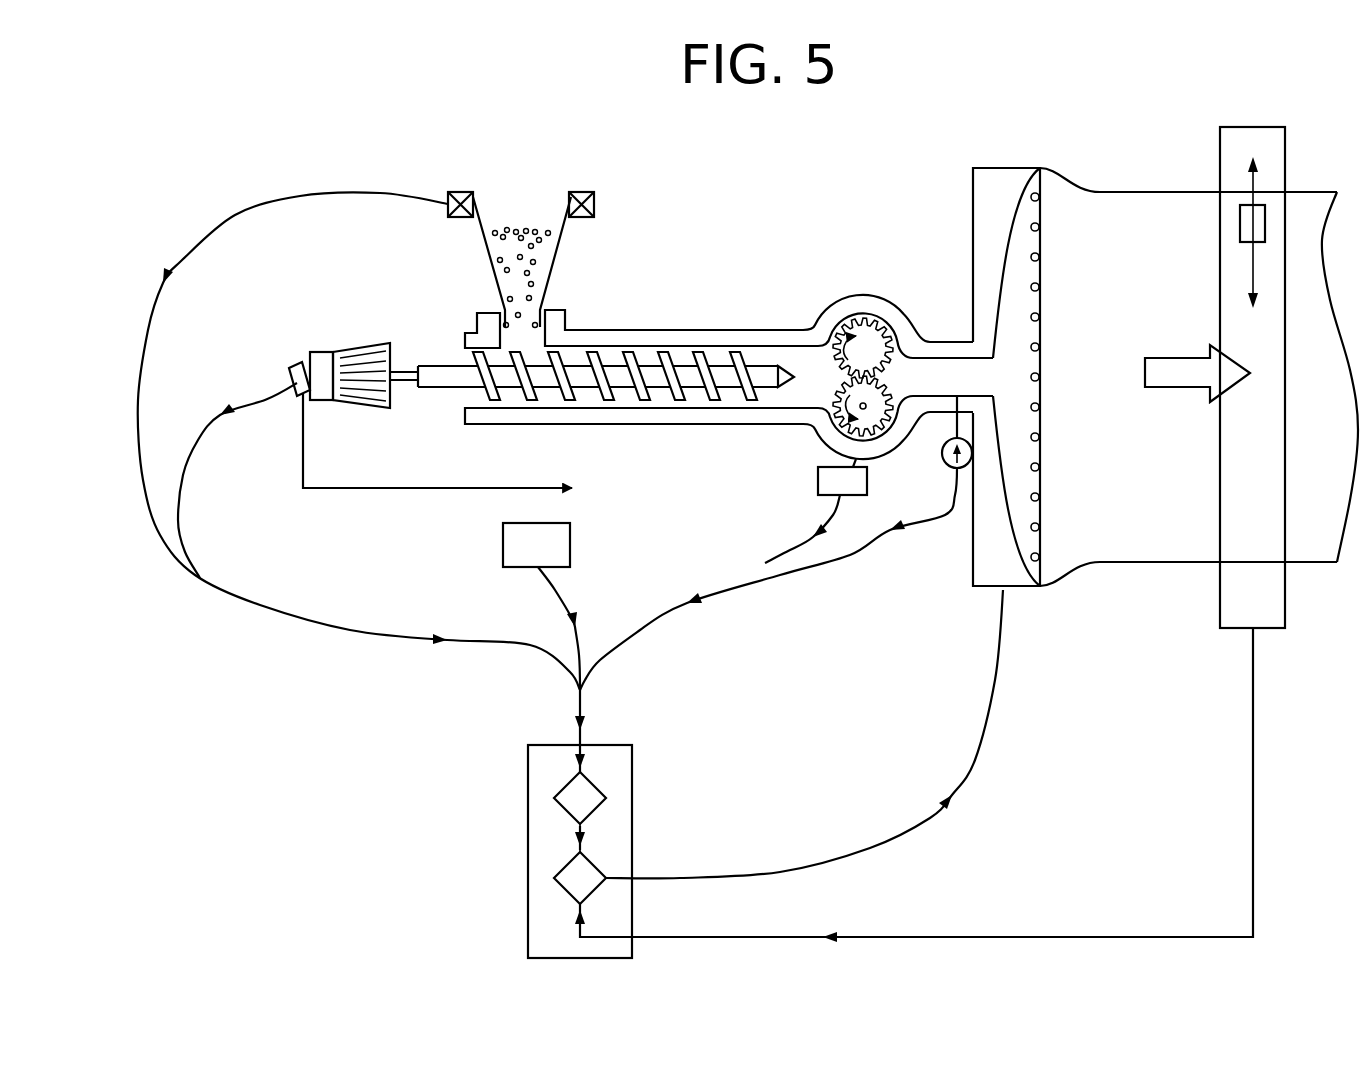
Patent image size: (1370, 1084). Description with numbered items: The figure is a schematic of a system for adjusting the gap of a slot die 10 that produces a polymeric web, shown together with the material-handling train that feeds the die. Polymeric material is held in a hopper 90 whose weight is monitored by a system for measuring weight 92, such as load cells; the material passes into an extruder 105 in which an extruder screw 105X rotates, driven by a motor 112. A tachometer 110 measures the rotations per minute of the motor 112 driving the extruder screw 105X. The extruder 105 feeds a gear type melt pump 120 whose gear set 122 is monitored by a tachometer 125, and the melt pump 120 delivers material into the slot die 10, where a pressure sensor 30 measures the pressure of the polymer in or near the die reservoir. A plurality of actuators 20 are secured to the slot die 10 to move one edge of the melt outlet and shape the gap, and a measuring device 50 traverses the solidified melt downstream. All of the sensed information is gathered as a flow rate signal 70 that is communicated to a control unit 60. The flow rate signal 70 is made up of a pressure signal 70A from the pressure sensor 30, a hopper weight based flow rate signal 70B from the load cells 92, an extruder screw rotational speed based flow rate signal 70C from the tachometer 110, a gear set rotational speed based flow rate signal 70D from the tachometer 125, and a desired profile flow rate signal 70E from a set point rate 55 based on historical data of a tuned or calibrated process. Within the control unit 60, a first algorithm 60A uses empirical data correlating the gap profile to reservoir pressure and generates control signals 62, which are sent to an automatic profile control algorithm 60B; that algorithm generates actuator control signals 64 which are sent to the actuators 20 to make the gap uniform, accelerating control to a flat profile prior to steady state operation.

The slot die 10 is at (1008, 165).
The actuators 20 is at (1049, 189).
The pressure sensor 30 is at (942, 462).
The measuring device 50 is at (1240, 630).
The set point rate 55 is at (552, 559).
The control unit 60 is at (550, 745).
The first algorithm 60A is at (592, 782).
The automatic profile control algorithm 60B is at (593, 862).
The control signals 62 is at (578, 825).
The actuator control signals 64 is at (875, 843).
The flow rate signal 70 is at (583, 702).
The pressure signal 70A is at (860, 540).
The hopper weight based flow rate signal 70B is at (248, 210).
The extruder screw rotational speed based flow rate signal 70C is at (193, 442).
The gear set rotational speed based flow rate signal 70D is at (790, 557).
The desired profile flow rate signal 70E is at (565, 587).
The hopper 90 is at (533, 140).
The system for measuring weight 92 is at (460, 190).
The extruder 105 is at (693, 330).
The extruder screw 105X is at (621, 375).
The tachometer 110 is at (300, 388).
The motor 112 is at (347, 408).
The gear type melt pump 120 is at (862, 298).
The gear set 122 is at (873, 350).
The tachometer 125 is at (818, 476).